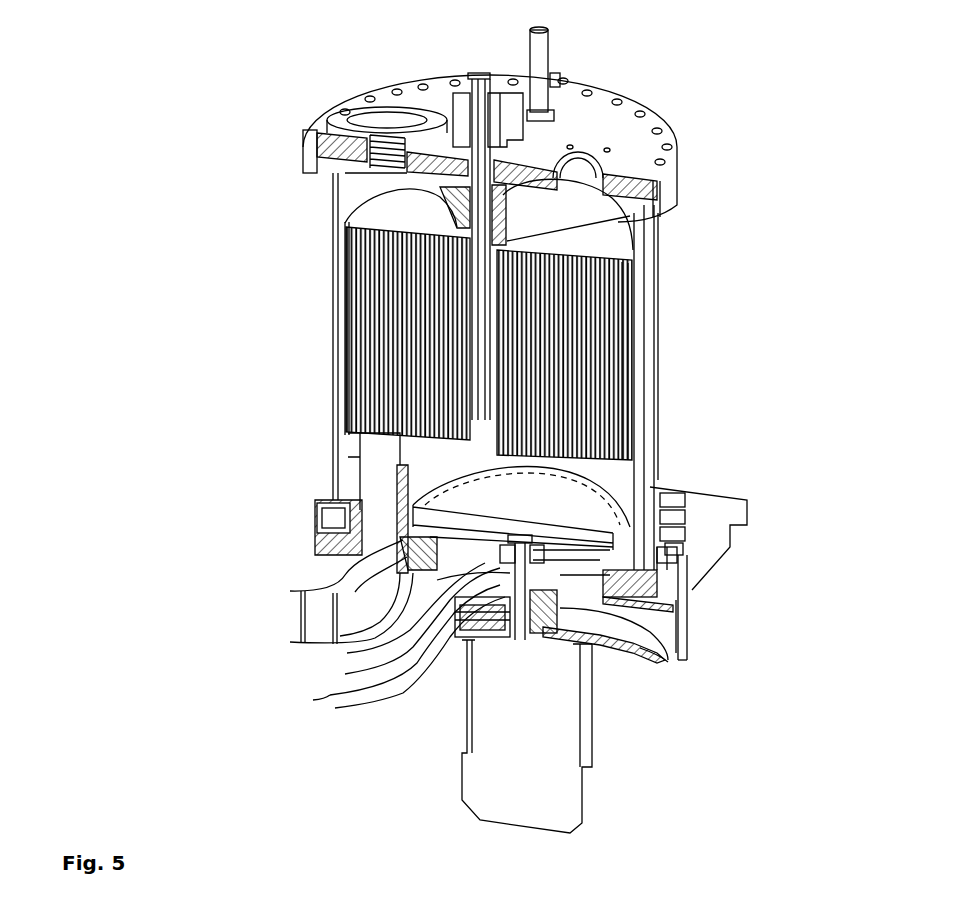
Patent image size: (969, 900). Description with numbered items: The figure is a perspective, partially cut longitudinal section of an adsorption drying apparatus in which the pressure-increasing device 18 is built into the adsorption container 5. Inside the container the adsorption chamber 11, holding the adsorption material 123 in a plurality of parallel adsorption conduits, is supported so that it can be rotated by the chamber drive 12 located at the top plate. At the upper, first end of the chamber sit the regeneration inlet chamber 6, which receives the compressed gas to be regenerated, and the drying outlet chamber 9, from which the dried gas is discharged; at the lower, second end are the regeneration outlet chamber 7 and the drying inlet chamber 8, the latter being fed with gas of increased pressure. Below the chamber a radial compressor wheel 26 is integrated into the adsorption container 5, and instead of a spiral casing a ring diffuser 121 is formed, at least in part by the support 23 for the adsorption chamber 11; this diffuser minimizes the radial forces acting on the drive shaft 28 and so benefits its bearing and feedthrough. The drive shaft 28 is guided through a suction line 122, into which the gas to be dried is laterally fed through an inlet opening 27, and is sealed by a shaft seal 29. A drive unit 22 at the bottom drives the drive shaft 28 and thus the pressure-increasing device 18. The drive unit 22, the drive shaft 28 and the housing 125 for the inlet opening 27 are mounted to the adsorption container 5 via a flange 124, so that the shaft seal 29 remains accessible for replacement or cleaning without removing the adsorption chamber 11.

The adsorption container 5 is at (640, 267).
The regeneration inlet chamber 6 is at (618, 222).
The regeneration outlet chamber 7 is at (622, 482).
The drying inlet chamber 8 is at (392, 452).
The drying outlet chamber 9 is at (373, 192).
The adsorption chamber 11 is at (620, 337).
The chamber drive 12 is at (450, 84).
The pressure-increasing device 18 is at (708, 629).
The drive unit 22 is at (533, 735).
The support 23 is at (327, 507).
The radial compressor wheel 26 is at (677, 598).
The inlet opening 27 is at (660, 657).
The drive shaft 28 is at (345, 674).
The shaft seal 29 is at (335, 708).
The ring diffuser 121 is at (340, 597).
The suction line 122 is at (313, 700).
The adsorption material 123 is at (640, 383).
The flange 124 is at (347, 653).
The housing 125 is at (660, 660).